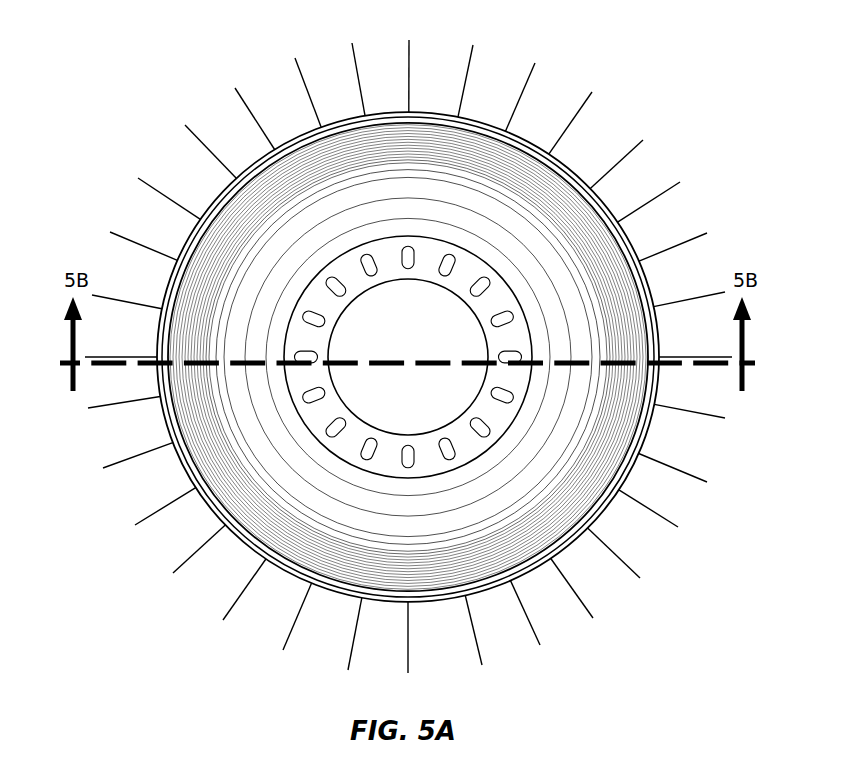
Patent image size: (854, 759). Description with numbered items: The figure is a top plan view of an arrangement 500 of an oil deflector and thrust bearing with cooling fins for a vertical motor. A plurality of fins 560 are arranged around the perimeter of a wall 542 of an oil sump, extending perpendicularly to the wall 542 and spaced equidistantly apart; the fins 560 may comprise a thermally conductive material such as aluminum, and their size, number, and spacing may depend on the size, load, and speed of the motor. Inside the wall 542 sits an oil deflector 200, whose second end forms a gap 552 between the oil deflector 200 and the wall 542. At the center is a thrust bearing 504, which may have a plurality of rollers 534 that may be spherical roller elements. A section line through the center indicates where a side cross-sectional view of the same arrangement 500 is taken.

The arrangement 500 is at (408, 370).
The oil deflector 200 is at (408, 370).
The wall 542 is at (532, 575).
The gap 552 is at (484, 570).
The rollers 534 is at (378, 275).
The thrust bearing 504 is at (419, 432).
The fins 560 is at (233, 603).